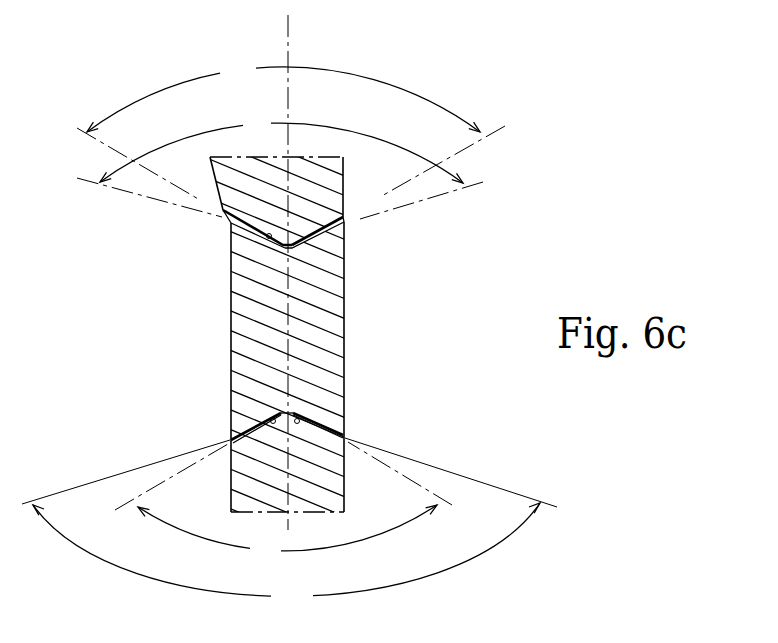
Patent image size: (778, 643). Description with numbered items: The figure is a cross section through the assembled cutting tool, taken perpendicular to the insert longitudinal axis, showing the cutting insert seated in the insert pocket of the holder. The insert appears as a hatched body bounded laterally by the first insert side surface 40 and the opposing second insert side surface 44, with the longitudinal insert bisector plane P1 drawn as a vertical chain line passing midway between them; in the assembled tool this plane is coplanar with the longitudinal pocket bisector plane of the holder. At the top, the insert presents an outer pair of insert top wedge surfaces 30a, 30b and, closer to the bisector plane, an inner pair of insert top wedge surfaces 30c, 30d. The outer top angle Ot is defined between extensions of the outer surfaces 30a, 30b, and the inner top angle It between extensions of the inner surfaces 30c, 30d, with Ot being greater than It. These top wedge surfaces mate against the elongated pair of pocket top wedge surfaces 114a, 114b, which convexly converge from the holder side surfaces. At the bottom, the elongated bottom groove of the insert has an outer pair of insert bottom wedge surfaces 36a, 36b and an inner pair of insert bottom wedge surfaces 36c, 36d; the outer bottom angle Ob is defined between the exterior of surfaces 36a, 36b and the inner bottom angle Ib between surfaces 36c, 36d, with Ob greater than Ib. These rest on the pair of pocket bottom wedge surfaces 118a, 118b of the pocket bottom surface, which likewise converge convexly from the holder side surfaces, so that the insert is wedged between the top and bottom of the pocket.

The longitudinal insert bisector plane P1 is at (288, 30).
The inner top angle It is at (291, 129).
The outer top angle Ot is at (280, 165).
The inner bottom angle Ib is at (283, 500).
The outer bottom angle Ob is at (289, 522).
The first insert side surface 40 is at (345, 338).
The second insert side surface 44 is at (231, 318).
The outer insert top wedge surface 30a is at (346, 236).
The outer insert top wedge surface 30b is at (232, 243).
The inner insert top wedge surface 30c is at (290, 247).
The inner insert top wedge surface 30d is at (266, 238).
The pocket top wedge surface 114a is at (347, 220).
The pocket top wedge surface 114b is at (229, 215).
The outer insert bottom wedge surface 36a is at (345, 435).
The outer insert bottom wedge surface 36b is at (236, 430).
The inner insert bottom wedge surface 36c is at (298, 416).
The inner insert bottom wedge surface 36d is at (270, 411).
The pocket bottom wedge surface 118a is at (346, 438).
The pocket bottom wedge surface 118b is at (230, 440).